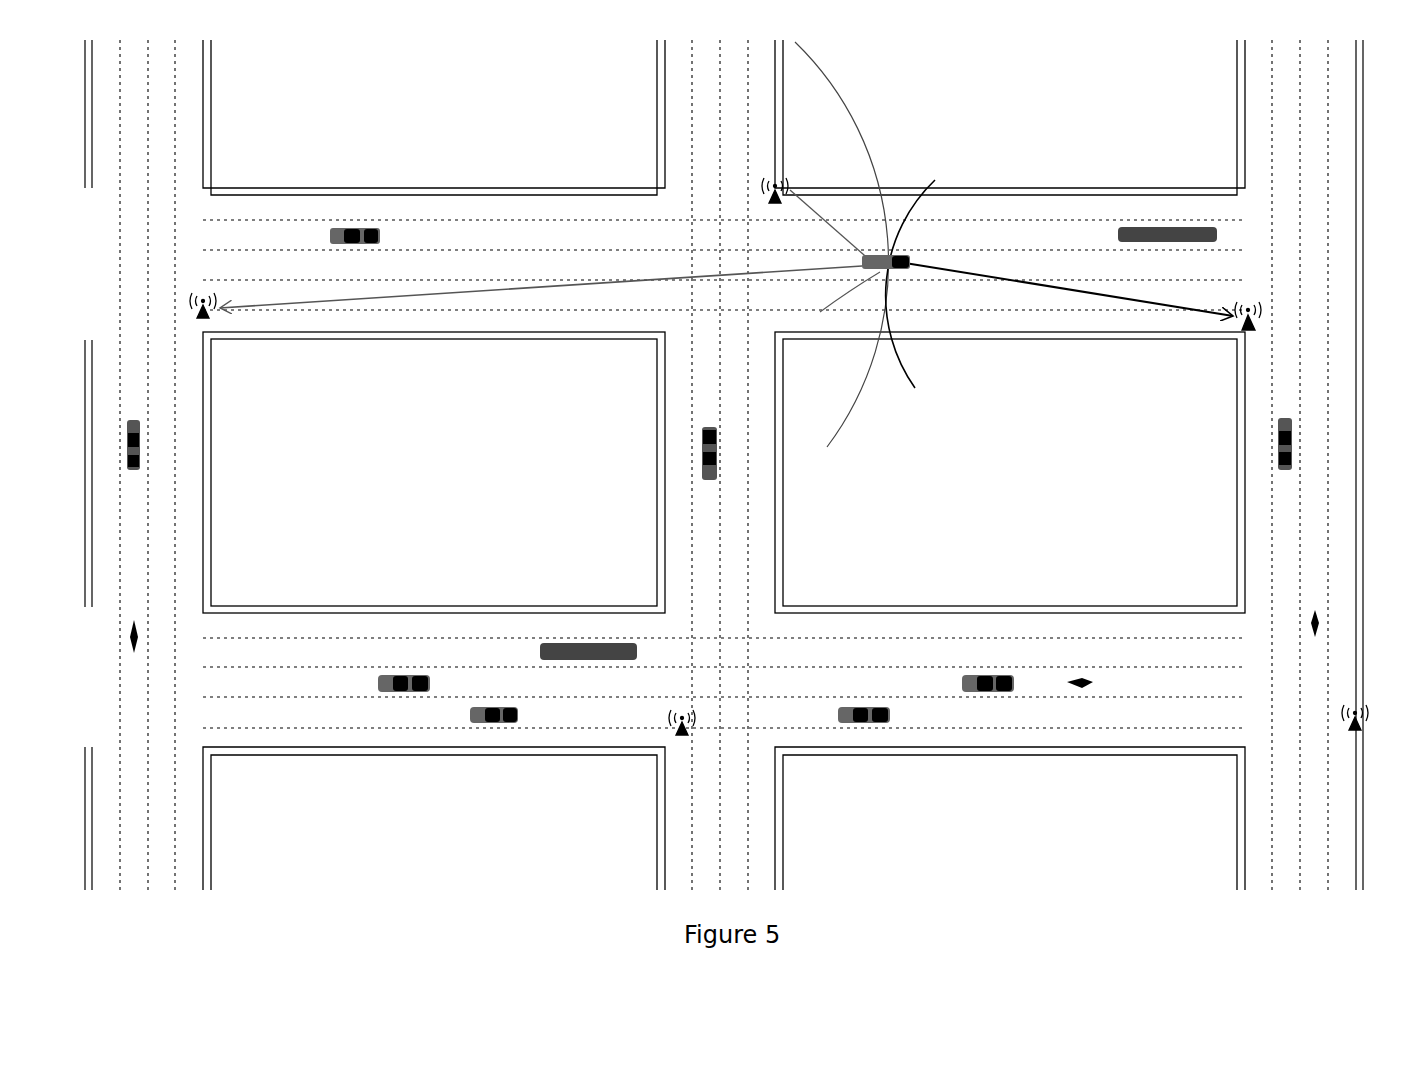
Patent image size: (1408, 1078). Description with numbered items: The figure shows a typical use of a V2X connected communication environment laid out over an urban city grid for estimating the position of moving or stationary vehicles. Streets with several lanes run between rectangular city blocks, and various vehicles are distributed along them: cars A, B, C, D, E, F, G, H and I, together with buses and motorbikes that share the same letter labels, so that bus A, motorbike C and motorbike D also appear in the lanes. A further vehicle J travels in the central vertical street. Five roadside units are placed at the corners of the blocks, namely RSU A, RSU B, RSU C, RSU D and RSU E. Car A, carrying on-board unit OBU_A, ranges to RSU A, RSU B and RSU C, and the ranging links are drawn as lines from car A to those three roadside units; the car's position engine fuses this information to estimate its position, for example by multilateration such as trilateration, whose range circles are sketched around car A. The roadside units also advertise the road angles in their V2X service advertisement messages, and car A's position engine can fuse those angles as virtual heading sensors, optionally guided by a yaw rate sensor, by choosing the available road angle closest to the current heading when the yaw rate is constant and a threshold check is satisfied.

The car A is at (910, 275).
The car B is at (566, 660).
The car C is at (360, 226).
The car D is at (122, 450).
The car E is at (405, 692).
The car F is at (485, 723).
The car G is at (865, 723).
The car H is at (985, 692).
The car I is at (1292, 447).
The vehicle J is at (702, 454).
The roadside unit A RSU A is at (1265, 334).
The roadside unit B RSU B is at (793, 207).
The roadside unit C RSU C is at (222, 326).
The roadside unit D RSU D is at (701, 742).
The roadside unit E RSU E is at (1372, 737).